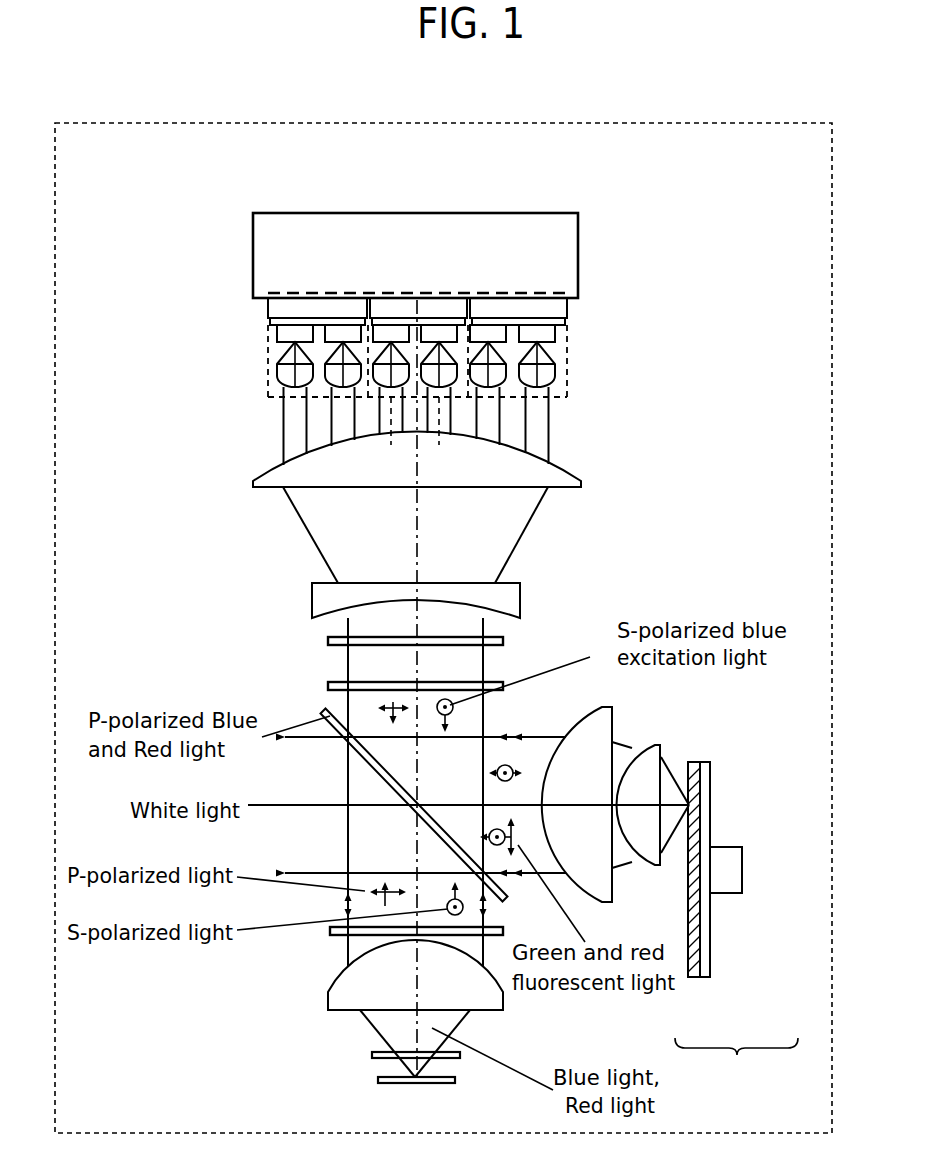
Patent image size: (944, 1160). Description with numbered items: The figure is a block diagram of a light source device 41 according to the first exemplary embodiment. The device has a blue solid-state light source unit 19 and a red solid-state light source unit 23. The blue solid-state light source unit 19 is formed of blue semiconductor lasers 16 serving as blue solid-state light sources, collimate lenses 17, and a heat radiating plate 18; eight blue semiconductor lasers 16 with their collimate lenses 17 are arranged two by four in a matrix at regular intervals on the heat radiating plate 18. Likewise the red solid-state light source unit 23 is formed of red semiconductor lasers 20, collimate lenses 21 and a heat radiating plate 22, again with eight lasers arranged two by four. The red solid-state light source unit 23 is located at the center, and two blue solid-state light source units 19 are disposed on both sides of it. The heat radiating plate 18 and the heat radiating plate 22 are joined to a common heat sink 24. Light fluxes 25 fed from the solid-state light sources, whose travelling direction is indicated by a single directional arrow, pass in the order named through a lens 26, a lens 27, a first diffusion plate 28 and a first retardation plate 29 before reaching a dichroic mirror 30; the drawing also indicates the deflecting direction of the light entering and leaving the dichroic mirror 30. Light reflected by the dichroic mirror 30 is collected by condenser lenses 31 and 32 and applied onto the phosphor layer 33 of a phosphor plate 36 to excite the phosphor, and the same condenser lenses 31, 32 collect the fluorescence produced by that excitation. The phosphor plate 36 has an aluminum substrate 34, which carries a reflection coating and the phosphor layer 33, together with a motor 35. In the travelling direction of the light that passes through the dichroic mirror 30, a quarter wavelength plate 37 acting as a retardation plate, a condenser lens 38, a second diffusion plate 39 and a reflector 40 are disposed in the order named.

The blue semiconductor laser 16 is at (300, 333).
The collimate lens 17 is at (290, 380).
The heat radiating plate 18 is at (285, 307).
The blue solid-state light source unit 19 is at (268, 352).
The red semiconductor laser 20 is at (389, 337).
The collimate lens 21 is at (368, 383).
The heat radiating plate 22 is at (450, 307).
The red solid-state light source unit 23 is at (380, 313).
The heat sink 24 is at (580, 228).
The light fluxes 25 is at (282, 440).
The lens 26 is at (255, 481).
The lens 27 is at (312, 598).
The first diffusion plate 28 is at (328, 640).
The first retardation plate 29 is at (328, 684).
The dichroic mirror 30 is at (322, 710).
The condenser lens 31 is at (612, 715).
The condenser lens 32 is at (662, 752).
The phosphor layer 33 is at (696, 958).
The aluminum substrate 34 is at (708, 958).
The motor 35 is at (725, 883).
The phosphor plate 36 is at (736, 1061).
The quarter wavelength plate 37 is at (330, 930).
The condenser lens 38 is at (328, 1000).
The second diffusion plate 39 is at (372, 1055).
The reflector 40 is at (378, 1080).
The light source device 41 is at (832, 553).